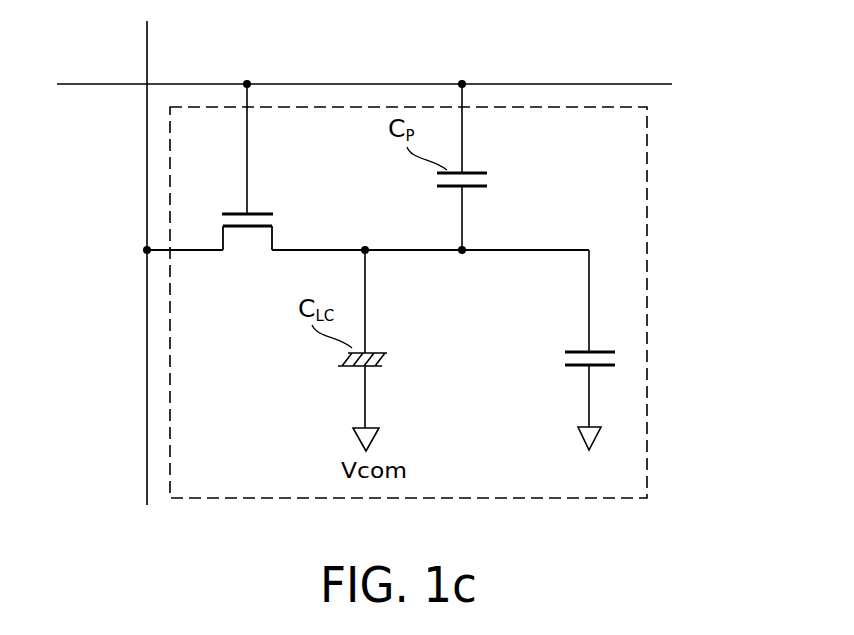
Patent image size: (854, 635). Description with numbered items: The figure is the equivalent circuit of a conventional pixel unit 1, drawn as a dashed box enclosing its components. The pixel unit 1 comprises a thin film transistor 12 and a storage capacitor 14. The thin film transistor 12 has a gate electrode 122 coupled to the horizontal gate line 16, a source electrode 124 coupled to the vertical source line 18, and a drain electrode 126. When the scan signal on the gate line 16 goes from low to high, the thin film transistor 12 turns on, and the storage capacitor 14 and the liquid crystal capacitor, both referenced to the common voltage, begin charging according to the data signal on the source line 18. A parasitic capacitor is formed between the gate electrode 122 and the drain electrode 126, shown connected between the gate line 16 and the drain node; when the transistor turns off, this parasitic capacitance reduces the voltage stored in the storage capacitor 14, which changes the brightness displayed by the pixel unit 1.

The pixel unit 1 is at (648, 128).
The thin film transistor 12 is at (263, 200).
The storage capacitor 14 is at (578, 350).
The gate line 16 is at (93, 82).
The source line 18 is at (148, 48).
The gate electrode 122 is at (248, 137).
The source electrode 124 is at (200, 248).
The drain electrode 126 is at (313, 248).